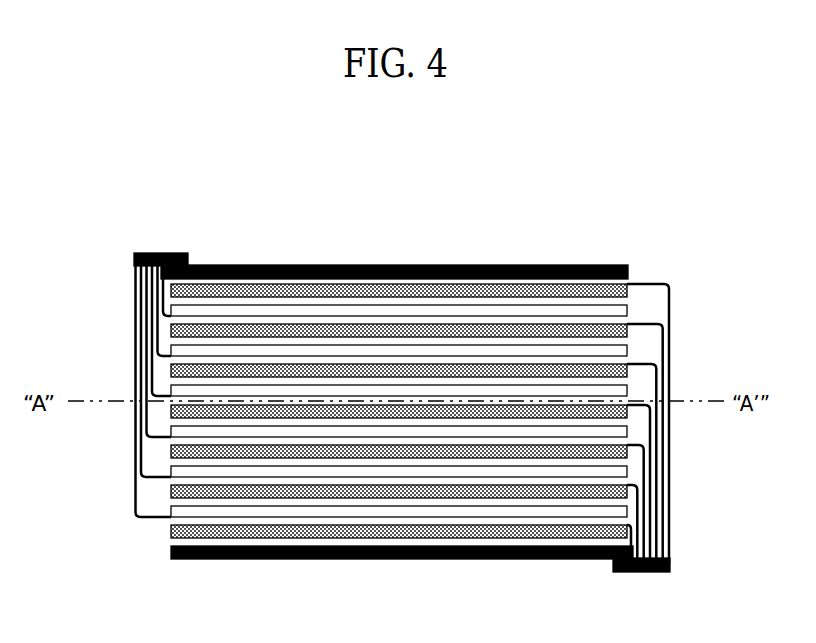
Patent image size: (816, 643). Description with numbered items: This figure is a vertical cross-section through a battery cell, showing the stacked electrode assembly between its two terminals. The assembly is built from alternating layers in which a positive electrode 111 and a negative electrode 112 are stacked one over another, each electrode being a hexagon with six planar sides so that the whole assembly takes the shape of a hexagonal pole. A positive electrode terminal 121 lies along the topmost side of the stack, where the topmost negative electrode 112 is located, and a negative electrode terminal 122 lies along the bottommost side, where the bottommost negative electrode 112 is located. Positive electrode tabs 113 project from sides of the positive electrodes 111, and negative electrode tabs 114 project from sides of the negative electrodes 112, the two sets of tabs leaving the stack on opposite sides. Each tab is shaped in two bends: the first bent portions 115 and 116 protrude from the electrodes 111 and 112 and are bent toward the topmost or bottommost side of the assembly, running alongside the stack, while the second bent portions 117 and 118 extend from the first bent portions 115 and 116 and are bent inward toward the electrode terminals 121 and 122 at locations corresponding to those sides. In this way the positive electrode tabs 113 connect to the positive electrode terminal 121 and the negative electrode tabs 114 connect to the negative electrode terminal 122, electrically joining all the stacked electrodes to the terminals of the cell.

The positive electrode 111 is at (287, 518).
The negative electrode 112 is at (548, 292).
The positive electrode tabs 113 is at (126, 385).
The negative electrode tabs 114 is at (673, 420).
The first bent portion 115 is at (136, 514).
The first bent portion 116 is at (669, 288).
The second bent portion 117 is at (137, 254).
The second bent portion 118 is at (668, 563).
The positive electrode terminal 121 is at (393, 265).
The negative electrode terminal 122 is at (385, 558).